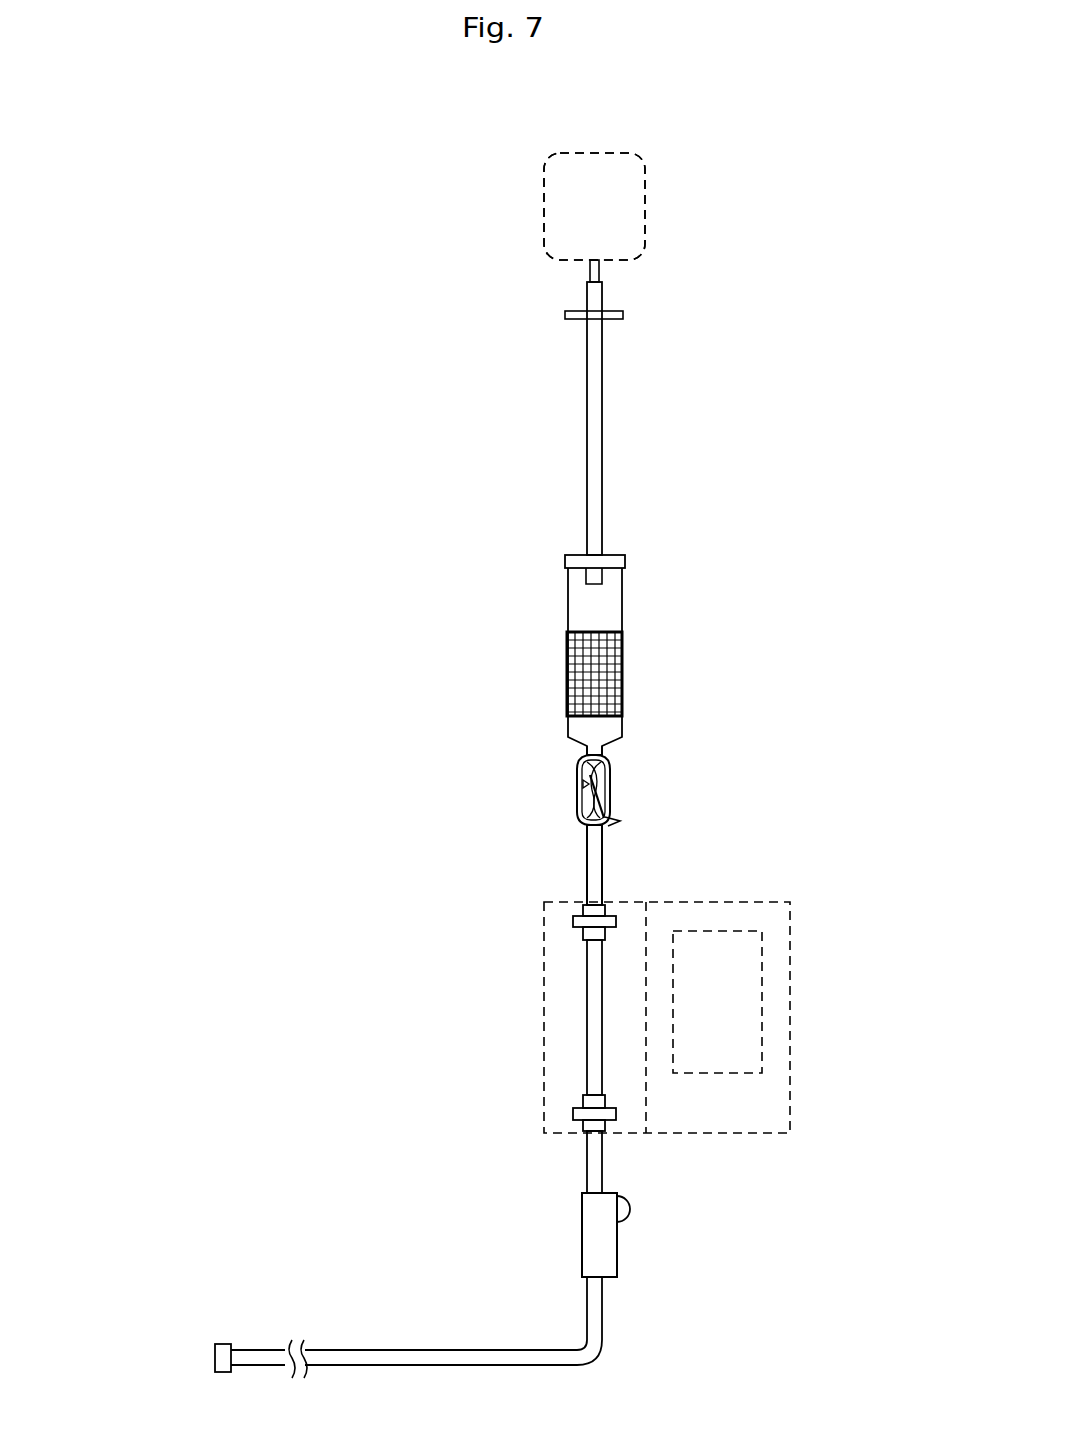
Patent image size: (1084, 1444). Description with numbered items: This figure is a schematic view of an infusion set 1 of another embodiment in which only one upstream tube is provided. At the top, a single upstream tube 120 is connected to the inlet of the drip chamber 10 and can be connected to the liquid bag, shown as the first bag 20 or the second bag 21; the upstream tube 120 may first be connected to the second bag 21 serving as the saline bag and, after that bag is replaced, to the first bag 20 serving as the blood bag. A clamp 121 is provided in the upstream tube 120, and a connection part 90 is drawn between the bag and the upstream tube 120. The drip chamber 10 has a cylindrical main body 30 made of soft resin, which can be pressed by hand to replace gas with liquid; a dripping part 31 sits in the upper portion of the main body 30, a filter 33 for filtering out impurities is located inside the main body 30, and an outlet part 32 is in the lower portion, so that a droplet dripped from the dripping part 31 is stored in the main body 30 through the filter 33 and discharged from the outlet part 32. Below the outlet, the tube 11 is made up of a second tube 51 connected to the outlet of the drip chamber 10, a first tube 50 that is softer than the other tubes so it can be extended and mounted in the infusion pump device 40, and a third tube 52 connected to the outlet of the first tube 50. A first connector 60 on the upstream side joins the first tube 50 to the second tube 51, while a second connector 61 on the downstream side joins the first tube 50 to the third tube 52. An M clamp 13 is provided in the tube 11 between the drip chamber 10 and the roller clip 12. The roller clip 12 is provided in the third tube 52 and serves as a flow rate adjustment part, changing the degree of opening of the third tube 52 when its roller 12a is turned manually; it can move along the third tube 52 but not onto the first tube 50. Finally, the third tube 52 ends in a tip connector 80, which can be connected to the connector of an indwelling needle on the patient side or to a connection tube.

The infusion set 1 is at (398, 244).
The first bag 20 is at (599, 150).
The second bag 21 is at (594, 206).
The connection port 90 is at (600, 270).
The upstream tube 120 is at (603, 383).
The clamp 121 is at (624, 316).
The drip chamber 10 is at (633, 551).
The main body 30 is at (624, 578).
The dripping part 31 is at (586, 576).
The filter 33 is at (610, 640).
The outlet part 32 is at (604, 749).
The M clamp 13 is at (621, 766).
The tube 11 is at (612, 838).
The second tube 51 is at (587, 836).
The infusion pump device 40 is at (698, 893).
The first connector 60 is at (573, 921).
The first tube 50 is at (587, 1007).
The second connector 61 is at (573, 1114).
The roller clip 12 is at (619, 1237).
The roller 12a is at (631, 1210).
The third tube 52 is at (587, 1303).
The tip connector 80 is at (224, 1344).